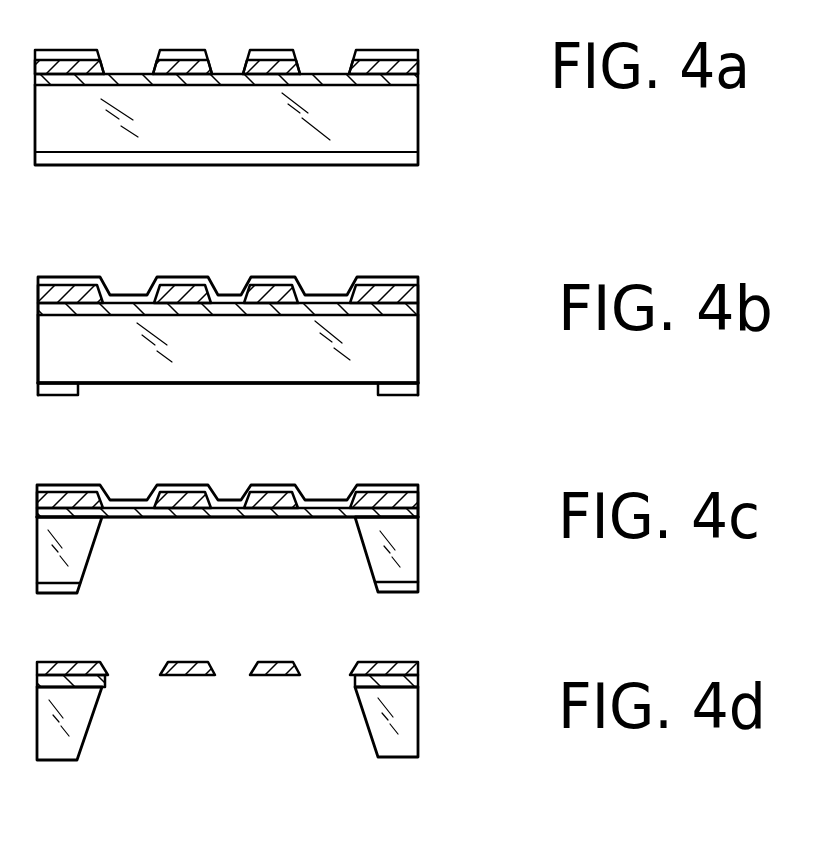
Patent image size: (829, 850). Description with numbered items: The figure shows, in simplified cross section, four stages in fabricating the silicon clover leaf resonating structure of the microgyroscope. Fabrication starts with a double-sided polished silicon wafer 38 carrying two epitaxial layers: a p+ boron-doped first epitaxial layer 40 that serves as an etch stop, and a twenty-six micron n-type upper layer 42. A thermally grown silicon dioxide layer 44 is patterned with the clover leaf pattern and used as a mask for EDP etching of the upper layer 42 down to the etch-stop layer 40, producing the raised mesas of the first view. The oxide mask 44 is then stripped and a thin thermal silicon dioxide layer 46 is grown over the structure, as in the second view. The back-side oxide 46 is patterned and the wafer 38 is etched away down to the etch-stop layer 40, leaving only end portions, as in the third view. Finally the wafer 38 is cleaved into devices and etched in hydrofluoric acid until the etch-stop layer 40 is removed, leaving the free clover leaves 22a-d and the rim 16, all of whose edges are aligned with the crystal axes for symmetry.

In FIG. 4D, the rim 16 is at (410, 765).
In FIG. 4D, the clover leaves 22a-d is at (222, 688).
In FIG. 4A, the silicon wafer 38 is at (408, 125).
In FIG. 4B, the silicon wafer 38 is at (398, 362).
In FIG. 4C, the silicon wafer 38 is at (410, 553).
In FIG. 4D, the silicon wafer 38 is at (408, 728).
In FIG. 4A, the first epitaxial layer 40 is at (418, 80).
In FIG. 4B, the first epitaxial layer 40 is at (420, 306).
In FIG. 4C, the first epitaxial layer 40 is at (420, 512).
In FIG. 4D, the first epitaxial layer 40 is at (420, 682).
In FIG. 4A, the upper layer 42 is at (348, 72).
In FIG. 4B, the upper layer 42 is at (420, 292).
In FIG. 4C, the upper layer 42 is at (420, 502).
In FIG. 4D, the upper layer 42 is at (200, 660).
In FIG. 4A, the silicon dioxide layer 44 is at (395, 52).
In FIG. 4B, the thermal silicon dioxide layer 46 is at (390, 278).
In FIG. 4C, the thermal silicon dioxide layer 46 is at (398, 485).